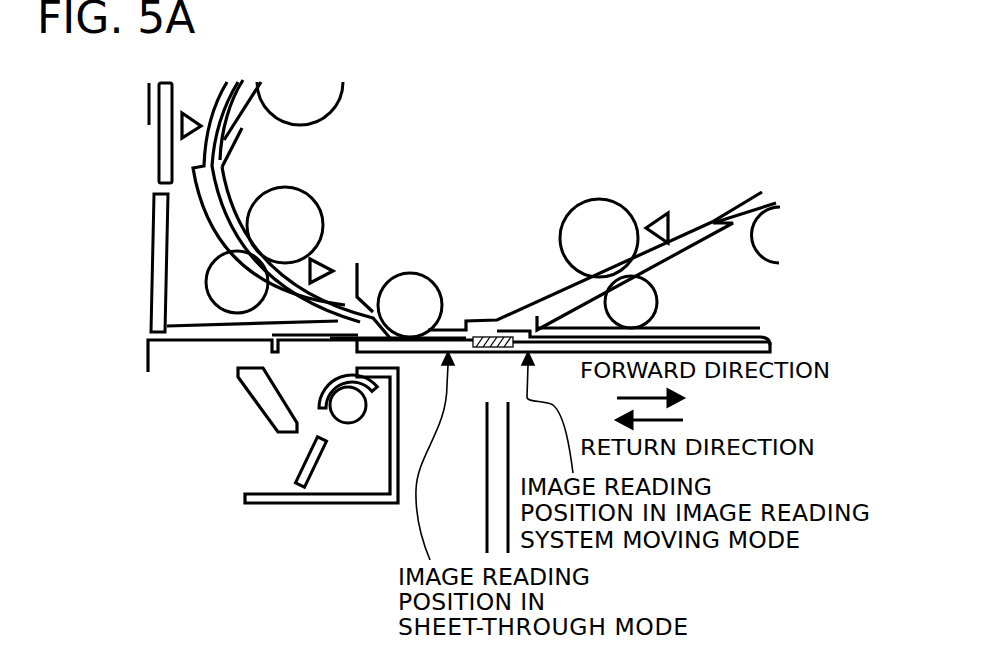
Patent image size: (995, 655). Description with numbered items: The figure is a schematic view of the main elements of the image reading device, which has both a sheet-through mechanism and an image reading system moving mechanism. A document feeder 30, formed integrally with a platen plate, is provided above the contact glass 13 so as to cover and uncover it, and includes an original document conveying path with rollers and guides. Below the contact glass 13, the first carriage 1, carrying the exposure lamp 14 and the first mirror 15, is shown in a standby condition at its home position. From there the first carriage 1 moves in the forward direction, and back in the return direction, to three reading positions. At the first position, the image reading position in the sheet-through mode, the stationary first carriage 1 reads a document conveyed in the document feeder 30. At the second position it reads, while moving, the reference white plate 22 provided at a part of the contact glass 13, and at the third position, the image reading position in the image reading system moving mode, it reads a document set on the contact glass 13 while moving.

The first carriage 1 is at (278, 512).
The contact glass 13 is at (772, 337).
The exposure lamp 14 is at (335, 392).
The first mirror 15 is at (322, 462).
The reference white plate 22 is at (488, 334).
The document feeder 30 is at (153, 237).